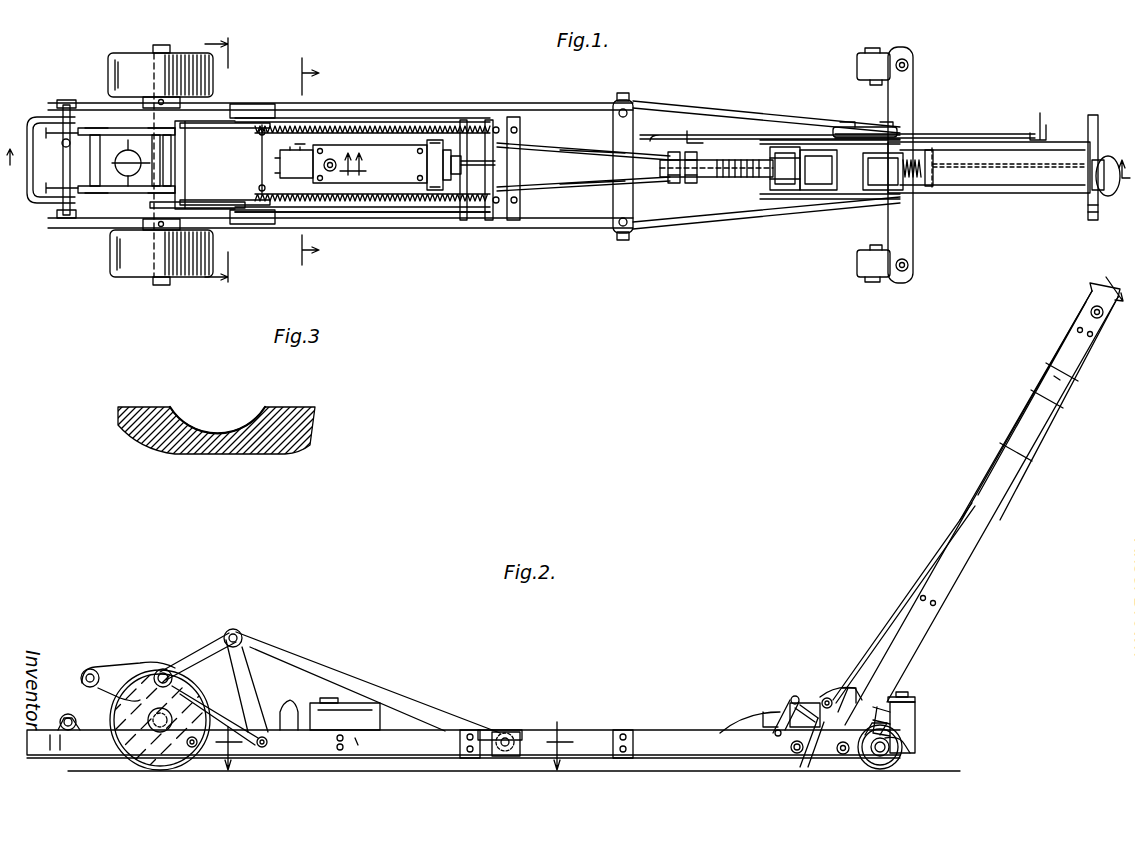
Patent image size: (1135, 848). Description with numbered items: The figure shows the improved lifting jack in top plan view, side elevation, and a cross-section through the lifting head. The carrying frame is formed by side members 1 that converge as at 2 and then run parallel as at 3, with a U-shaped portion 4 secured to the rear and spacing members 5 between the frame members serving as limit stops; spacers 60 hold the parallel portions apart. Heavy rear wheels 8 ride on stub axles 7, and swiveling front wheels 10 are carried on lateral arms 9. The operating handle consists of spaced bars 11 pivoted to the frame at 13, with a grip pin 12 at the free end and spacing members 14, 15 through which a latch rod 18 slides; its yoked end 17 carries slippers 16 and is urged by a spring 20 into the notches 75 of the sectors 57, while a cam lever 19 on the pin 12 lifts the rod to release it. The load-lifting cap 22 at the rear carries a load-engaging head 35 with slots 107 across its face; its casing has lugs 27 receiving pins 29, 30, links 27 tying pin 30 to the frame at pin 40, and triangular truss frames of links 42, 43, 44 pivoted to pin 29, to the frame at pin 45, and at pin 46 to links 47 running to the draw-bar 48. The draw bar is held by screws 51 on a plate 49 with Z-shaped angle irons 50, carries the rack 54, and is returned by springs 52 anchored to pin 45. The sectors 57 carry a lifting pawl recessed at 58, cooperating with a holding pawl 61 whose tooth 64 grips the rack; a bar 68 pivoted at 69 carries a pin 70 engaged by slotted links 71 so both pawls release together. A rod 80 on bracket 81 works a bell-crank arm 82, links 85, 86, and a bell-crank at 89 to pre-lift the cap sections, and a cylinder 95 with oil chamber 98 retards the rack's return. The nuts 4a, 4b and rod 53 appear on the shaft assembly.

In FIG. 1, the side members 1 is at (565, 104).
In FIG. 2, the side members 1 is at (668, 730).
In FIG. 1, the converging portion 2 is at (700, 111).
In FIG. 1, the parallel portion 3 is at (815, 138).
In FIG. 1, the U-shaped portion 4 is at (27, 124).
In FIG. 2, the U-shaped portion 4 is at (27, 730).
In FIG. 1, the adjusting nut 4a is at (672, 183).
In FIG. 1, the adjusting nut 4b is at (691, 183).
In FIG. 1, the spacing members 5 is at (465, 185).
In FIG. 2, the spacing members 5 is at (468, 758).
In FIG. 1, the stub axle 7 is at (160, 281).
In FIG. 2, the stub axle 7 is at (155, 728).
In FIG. 1, the rear wheels 8 is at (110, 264).
In FIG. 2, the rear wheels 8 is at (165, 767).
In FIG. 1, the arms 9 is at (925, 262).
In FIG. 2, the arms 9 is at (915, 700).
In FIG. 1, the front wheels 10 is at (857, 268).
In FIG. 2, the front wheels 10 is at (884, 769).
In FIG. 1, the spaced bars 11 is at (1055, 142).
In FIG. 2, the spaced bars 11 is at (993, 511).
In FIG. 1, the pin 12 is at (1098, 120).
In FIG. 2, the pin 12 is at (1102, 320).
In FIG. 2, the pivot 13 is at (843, 755).
In FIG. 1, the spacing member 14 is at (1096, 198).
In FIG. 1, the spacing member 15 is at (930, 192).
In FIG. 1, the guides or slippers 16 is at (872, 191).
In FIG. 2, the guides or slippers 16 is at (898, 683).
In FIG. 2, the yoked lower end 17 is at (1082, 315).
In FIG. 1, the latch rod 18 is at (978, 178).
In FIG. 1, the cam lever 19 is at (1100, 213).
In FIG. 2, the cam lever 19 is at (1030, 430).
In FIG. 1, the spring 20 is at (1126, 178).
In FIG. 1, the load-lifting cap 22 is at (114, 190).
In FIG. 2, the load-lifting cap 22 is at (115, 665).
In FIG. 2, the spaced lugs 27 is at (76, 717).
In FIG. 1, the pin 29 is at (168, 142).
In FIG. 2, the pin 29 is at (164, 668).
In FIG. 2, the pin 30 is at (90, 668).
In FIG. 3, the load-engaging head 35 is at (138, 407).
In FIG. 1, the pin 40 is at (197, 155).
In FIG. 2, the pin 40 is at (194, 748).
In FIG. 2, the link 42 is at (218, 712).
In FIG. 1, the link 43 is at (245, 123).
In FIG. 2, the link 43 is at (235, 672).
In FIG. 1, the link 44 is at (188, 210).
In FIG. 2, the link 44 is at (202, 645).
In FIG. 1, the pin 45 is at (262, 196).
In FIG. 2, the pin 45 is at (265, 748).
In FIG. 1, the pin 46 is at (242, 118).
In FIG. 2, the pin 46 is at (242, 636).
In FIG. 1, the links 47 is at (410, 121).
In FIG. 2, the links 47 is at (355, 675).
In FIG. 1, the draw-bar 48 is at (512, 117).
In FIG. 2, the draw-bar 48 is at (504, 733).
In FIG. 2, the plate 49 is at (500, 757).
In FIG. 1, the Z-shaped angle irons 50 is at (520, 168).
In FIG. 2, the Z-shaped angle irons 50 is at (515, 730).
In FIG. 1, the screws 51 is at (520, 198).
In FIG. 1, the springs 52 is at (372, 126).
In FIG. 1, the rod 53 is at (588, 157).
In FIG. 1, the rack 54 is at (733, 178).
In FIG. 2, the sectors 57 is at (842, 688).
In FIG. 1, the central recess 58 is at (812, 191).
In FIG. 2, the spacers 60 is at (793, 752).
In FIG. 2, the holding pawl 61 is at (790, 697).
In FIG. 1, the overhanging tooth 64 is at (782, 191).
In FIG. 2, the bar 68 is at (768, 712).
In FIG. 2, the pivot 69 is at (825, 697).
In FIG. 2, the pin 70 is at (806, 703).
In FIG. 2, the links 71 is at (806, 758).
In FIG. 2, the notches 75 is at (848, 688).
In FIG. 1, the rod 80 is at (962, 133).
In FIG. 2, the rod 80 is at (938, 553).
In FIG. 1, the bracket 81 is at (1038, 116).
In FIG. 1, the bell-crank arm 82 is at (852, 126).
In FIG. 1, the link 85 is at (742, 133).
In FIG. 1, the link 86 is at (596, 115).
In FIG. 1, the pivot 89 is at (60, 186).
In FIG. 2, the pivot 89 is at (66, 714).
In FIG. 1, the cylinder 95 is at (298, 150).
In FIG. 2, the cylinder 95 is at (285, 712).
In FIG. 1, the oil chamber 98 is at (382, 146).
In FIG. 2, the oil chamber 98 is at (330, 703).
In FIG. 1, the recesses or slots 107 is at (108, 178).
In FIG. 3, the recesses or slots 107 is at (190, 417).